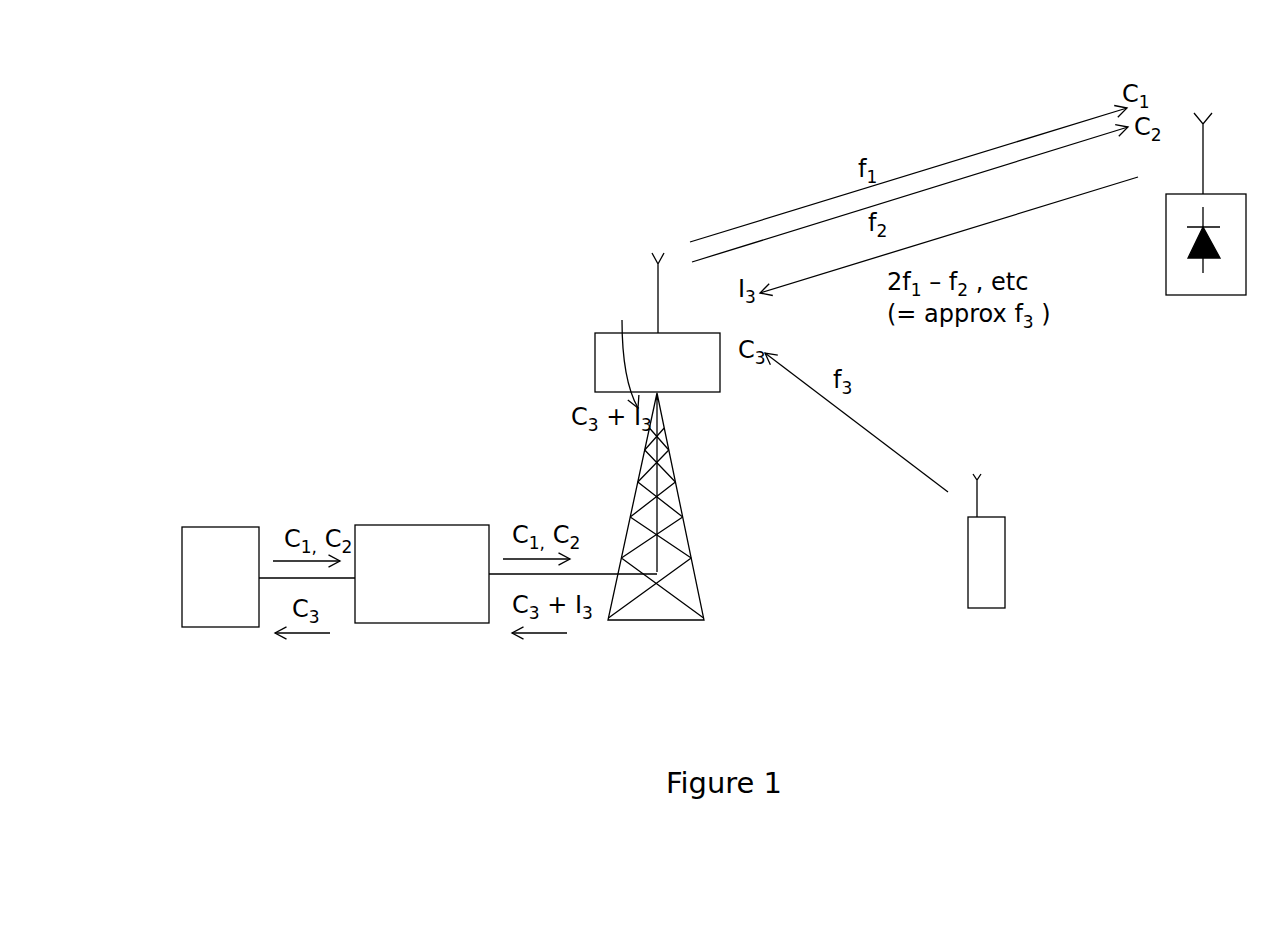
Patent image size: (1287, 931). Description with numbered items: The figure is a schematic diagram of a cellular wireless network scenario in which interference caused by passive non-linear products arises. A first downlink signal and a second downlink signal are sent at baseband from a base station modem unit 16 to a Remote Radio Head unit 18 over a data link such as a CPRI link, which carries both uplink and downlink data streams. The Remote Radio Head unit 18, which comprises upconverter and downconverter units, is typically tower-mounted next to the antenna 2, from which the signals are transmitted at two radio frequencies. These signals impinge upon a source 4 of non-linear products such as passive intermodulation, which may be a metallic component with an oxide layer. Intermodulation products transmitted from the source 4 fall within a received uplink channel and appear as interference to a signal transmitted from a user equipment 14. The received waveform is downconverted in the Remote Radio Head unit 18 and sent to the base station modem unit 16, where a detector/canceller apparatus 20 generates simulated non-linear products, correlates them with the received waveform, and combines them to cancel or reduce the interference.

The antenna 2 is at (648, 268).
The source of non-linear interference products 4 is at (1228, 185).
The user equipment 14 is at (1017, 527).
The base station modem unit 16 is at (225, 517).
The Remote Radio Head unit 18 is at (735, 400).
The detector/canceller apparatus 20 is at (432, 517).